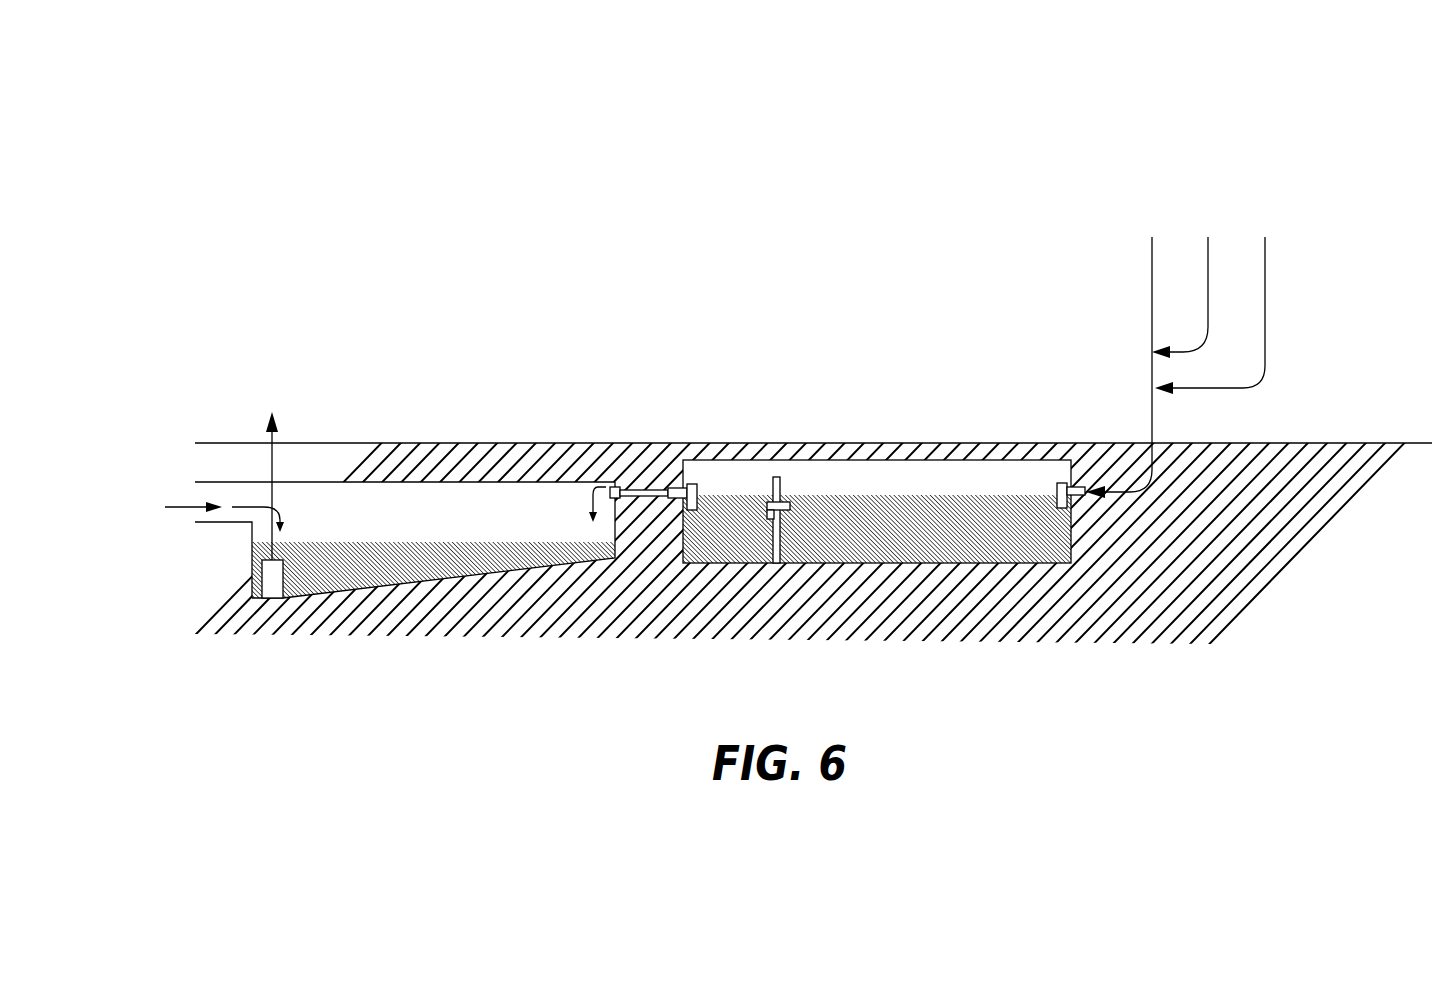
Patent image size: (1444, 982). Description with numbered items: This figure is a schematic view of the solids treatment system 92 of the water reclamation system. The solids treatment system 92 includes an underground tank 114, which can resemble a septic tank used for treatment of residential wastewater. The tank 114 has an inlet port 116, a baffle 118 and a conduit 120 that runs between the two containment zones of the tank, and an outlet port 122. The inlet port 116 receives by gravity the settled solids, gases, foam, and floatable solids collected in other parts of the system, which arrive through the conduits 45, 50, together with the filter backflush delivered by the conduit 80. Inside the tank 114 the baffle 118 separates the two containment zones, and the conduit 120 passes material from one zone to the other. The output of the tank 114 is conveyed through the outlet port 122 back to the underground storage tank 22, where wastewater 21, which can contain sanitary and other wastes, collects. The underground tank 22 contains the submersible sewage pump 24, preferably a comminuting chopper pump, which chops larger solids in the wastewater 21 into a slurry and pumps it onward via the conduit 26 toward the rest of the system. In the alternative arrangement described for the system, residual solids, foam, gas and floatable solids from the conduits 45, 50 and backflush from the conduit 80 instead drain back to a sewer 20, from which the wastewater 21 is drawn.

The sewer 20 is at (213, 497).
The wastewater 21 is at (358, 582).
The underground storage tank 22 is at (483, 573).
The submersible sewage pump 24 is at (272, 598).
The conduit 26 is at (278, 442).
The conduit 45 is at (1150, 285).
The conduit 50 is at (1208, 258).
The conduit 80 is at (1267, 267).
The solids treatment system 92 is at (657, 362).
The underground tank 114 is at (838, 458).
The inlet port 116 is at (1060, 485).
The baffle 118 is at (775, 477).
The conduit 120 is at (767, 503).
The outlet port 122 is at (683, 485).